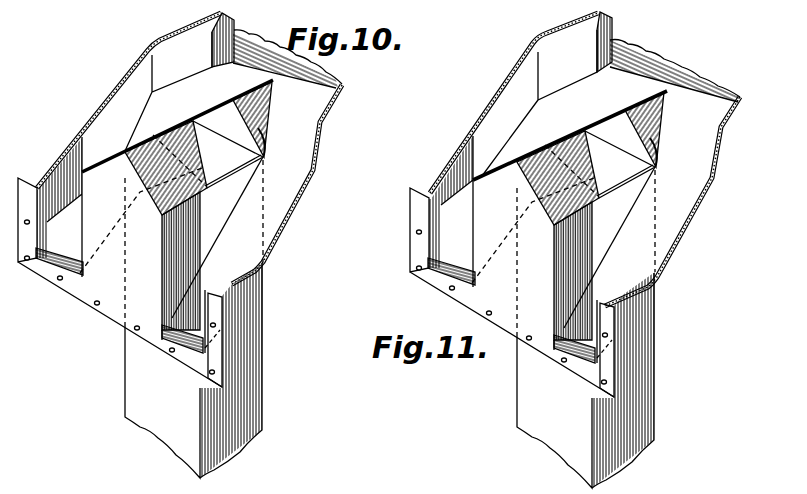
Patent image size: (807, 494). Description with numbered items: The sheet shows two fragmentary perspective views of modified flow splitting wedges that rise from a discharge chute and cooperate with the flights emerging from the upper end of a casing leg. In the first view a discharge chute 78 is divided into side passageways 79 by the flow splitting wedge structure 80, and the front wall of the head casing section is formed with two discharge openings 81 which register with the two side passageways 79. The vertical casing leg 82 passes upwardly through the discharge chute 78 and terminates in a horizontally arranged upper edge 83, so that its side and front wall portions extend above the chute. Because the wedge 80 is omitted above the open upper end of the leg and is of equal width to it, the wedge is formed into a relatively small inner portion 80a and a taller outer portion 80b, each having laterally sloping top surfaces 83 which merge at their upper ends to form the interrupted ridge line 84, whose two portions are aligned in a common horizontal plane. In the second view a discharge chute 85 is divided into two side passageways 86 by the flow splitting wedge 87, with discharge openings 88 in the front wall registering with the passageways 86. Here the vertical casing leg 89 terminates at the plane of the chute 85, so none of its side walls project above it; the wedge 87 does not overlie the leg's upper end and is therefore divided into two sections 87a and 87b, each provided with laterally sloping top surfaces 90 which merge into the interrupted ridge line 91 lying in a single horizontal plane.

In FIG. 10, the discharge chute 78 is at (317, 100).
In FIG. 10, the side passageways 79 is at (130, 136).
In FIG. 10, the flow splitting wedge structure 80 is at (158, 305).
In FIG. 10, the inner portion of flow splitting wedge 80a is at (268, 138).
In FIG. 10, the outer portion of flow splitting wedge 80b is at (162, 273).
In FIG. 10, the discharge openings 81 is at (43, 258).
In FIG. 10, the vertical casing leg 82 is at (233, 168).
In FIG. 10, the laterally sloping top surfaces 83 is at (152, 138).
In FIG. 10, the interrupted ridge line 84 is at (120, 152).
In FIG. 11, the discharge chute 85 is at (713, 118).
In FIG. 11, the side passageways 86 is at (538, 118).
In FIG. 11, the flow splitting wedge 87 is at (551, 322).
In FIG. 11, the wedge section 87a is at (655, 158).
In FIG. 11, the wedge section 87b is at (555, 297).
In FIG. 11, the discharge openings 88 is at (414, 255).
In FIG. 11, the vertical casing leg 89 is at (657, 376).
In FIG. 11, the laterally sloping top surfaces 90 is at (510, 168).
In FIG. 11, the interrupted ridge line 91 is at (550, 143).